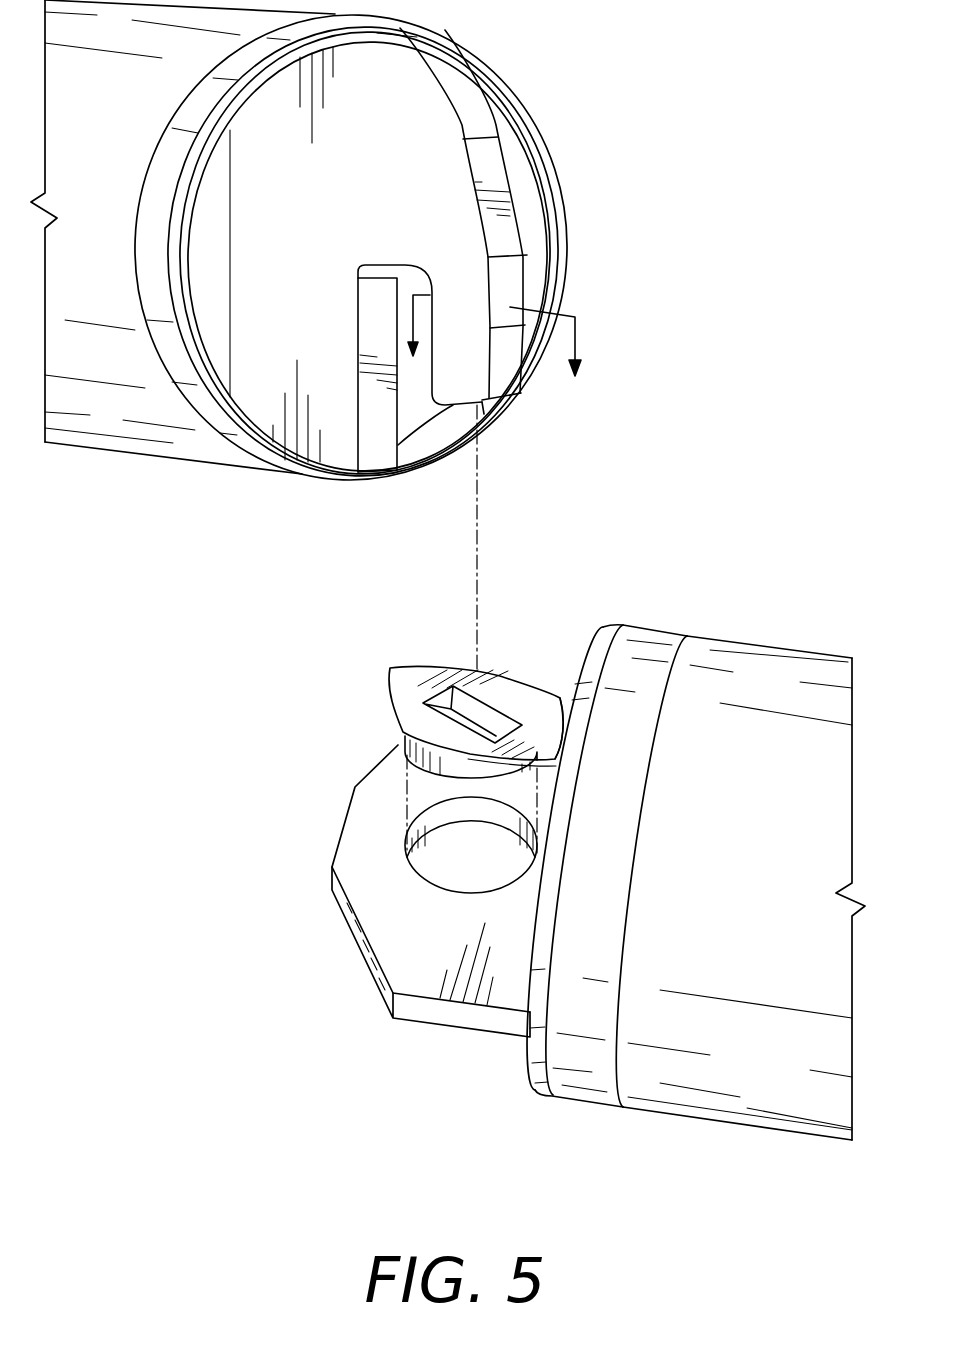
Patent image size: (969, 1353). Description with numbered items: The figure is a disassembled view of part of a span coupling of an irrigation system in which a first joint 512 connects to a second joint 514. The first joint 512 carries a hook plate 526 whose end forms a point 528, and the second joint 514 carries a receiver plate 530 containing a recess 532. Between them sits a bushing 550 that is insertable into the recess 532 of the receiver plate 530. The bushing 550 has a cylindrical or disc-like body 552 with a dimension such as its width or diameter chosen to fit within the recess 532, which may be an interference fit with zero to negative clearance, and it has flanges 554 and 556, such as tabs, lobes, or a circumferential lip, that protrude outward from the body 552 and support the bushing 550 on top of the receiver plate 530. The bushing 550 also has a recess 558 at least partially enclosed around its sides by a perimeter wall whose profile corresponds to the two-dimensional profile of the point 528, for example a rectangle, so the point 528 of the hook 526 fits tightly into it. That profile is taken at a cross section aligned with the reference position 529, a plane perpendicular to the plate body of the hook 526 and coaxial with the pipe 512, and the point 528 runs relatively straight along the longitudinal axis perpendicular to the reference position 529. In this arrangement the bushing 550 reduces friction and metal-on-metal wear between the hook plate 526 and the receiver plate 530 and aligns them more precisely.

The first joint 512 is at (117, 403).
The second joint 514 is at (732, 1080).
The hook plate 526 is at (393, 82).
The point 528 is at (448, 375).
The reference position 529 is at (577, 338).
The receiver plate 530 is at (390, 947).
The recess 532 is at (440, 867).
The bushing 550 is at (420, 719).
The body 552 is at (443, 763).
The flange 554 is at (403, 677).
The flange 556 is at (543, 737).
The recess 558 is at (443, 698).